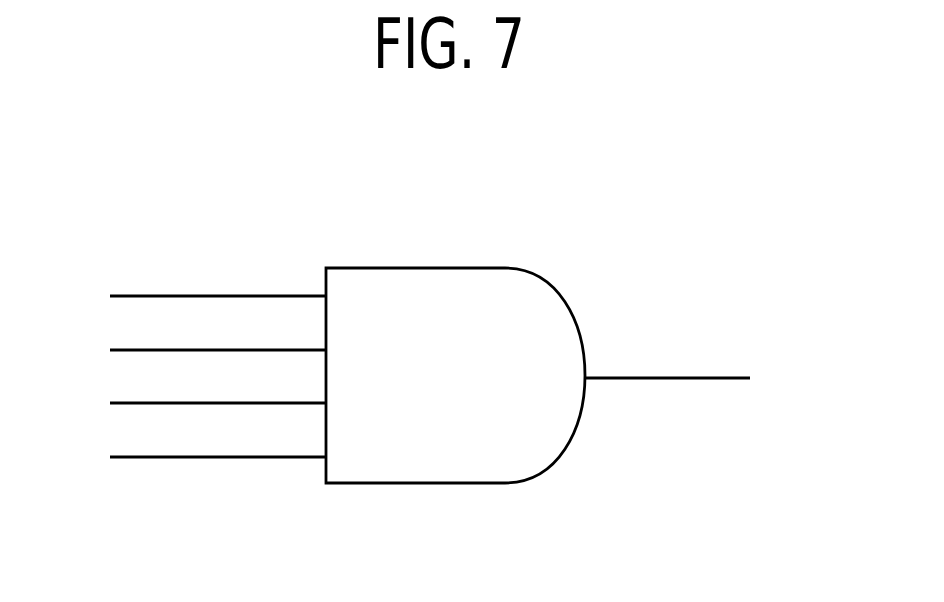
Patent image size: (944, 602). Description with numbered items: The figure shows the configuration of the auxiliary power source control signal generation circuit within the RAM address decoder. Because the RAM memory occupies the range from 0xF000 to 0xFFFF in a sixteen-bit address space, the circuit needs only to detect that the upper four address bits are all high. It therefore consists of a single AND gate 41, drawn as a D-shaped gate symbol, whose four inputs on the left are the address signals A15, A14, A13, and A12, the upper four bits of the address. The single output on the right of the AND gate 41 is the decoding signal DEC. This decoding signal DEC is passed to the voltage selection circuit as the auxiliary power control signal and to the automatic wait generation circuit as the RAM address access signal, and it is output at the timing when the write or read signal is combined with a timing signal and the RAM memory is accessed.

The AND gate 41 is at (494, 268).
The address signal A15 is at (175, 302).
The address signal A14 is at (175, 355).
The address signal A13 is at (175, 409).
The address signal A12 is at (175, 462).
The decoding signal DEC is at (714, 382).